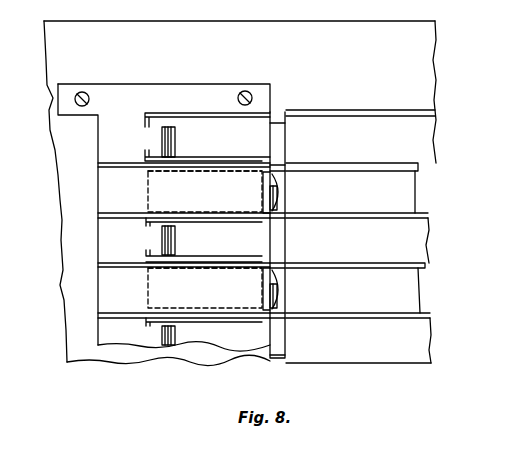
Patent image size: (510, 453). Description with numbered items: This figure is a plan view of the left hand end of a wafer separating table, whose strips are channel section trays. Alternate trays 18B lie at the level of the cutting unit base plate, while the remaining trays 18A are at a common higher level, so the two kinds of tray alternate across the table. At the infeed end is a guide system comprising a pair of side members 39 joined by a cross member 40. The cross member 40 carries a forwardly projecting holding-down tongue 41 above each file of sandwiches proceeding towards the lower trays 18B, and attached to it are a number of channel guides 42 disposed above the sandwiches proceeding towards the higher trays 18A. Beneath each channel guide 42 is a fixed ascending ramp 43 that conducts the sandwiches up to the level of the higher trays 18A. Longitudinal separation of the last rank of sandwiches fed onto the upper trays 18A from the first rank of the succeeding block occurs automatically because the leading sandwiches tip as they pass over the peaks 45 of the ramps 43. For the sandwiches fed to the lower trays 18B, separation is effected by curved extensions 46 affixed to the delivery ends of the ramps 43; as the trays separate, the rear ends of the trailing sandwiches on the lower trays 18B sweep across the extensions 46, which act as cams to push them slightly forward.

The higher trays 18A is at (415, 192).
The lower trays 18B is at (360, 236).
The side members 39 is at (79, 110).
The cross member 40 is at (98, 246).
The holding-down tongue 41 is at (176, 134).
The channel guides 42 is at (186, 201).
The ascending ramp 43 is at (224, 172).
The peaks 45 is at (278, 182).
The curved extensions 46 is at (278, 206).